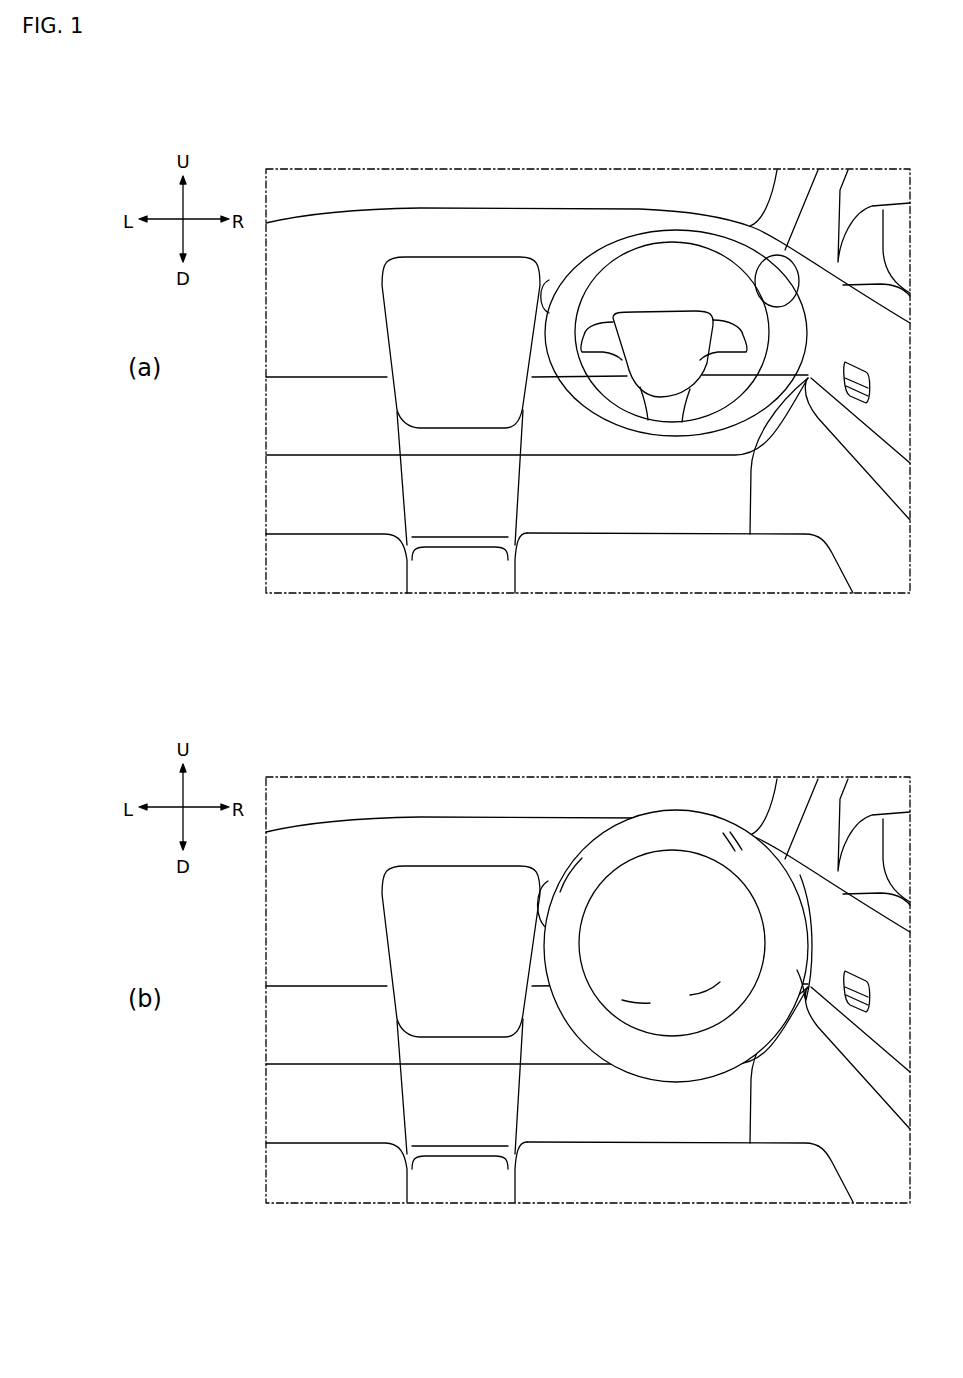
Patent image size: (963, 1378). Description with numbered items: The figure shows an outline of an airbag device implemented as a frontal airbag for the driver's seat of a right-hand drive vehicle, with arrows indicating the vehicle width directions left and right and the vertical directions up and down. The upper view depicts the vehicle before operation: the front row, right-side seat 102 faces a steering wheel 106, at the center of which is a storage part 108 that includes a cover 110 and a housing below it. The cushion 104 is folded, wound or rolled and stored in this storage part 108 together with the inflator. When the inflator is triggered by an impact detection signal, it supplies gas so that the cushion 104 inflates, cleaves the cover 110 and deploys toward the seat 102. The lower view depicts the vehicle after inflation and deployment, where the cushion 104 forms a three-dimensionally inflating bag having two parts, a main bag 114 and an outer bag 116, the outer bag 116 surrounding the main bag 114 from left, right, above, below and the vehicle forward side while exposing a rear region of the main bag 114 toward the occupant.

The seat 102 is at (790, 577).
The cushion 104 is at (678, 929).
The steering wheel 106 is at (648, 228).
The storage part 108 is at (643, 308).
The cover 110 is at (662, 378).
The main bag 114 is at (628, 1000).
The outer bag 116 is at (605, 838).